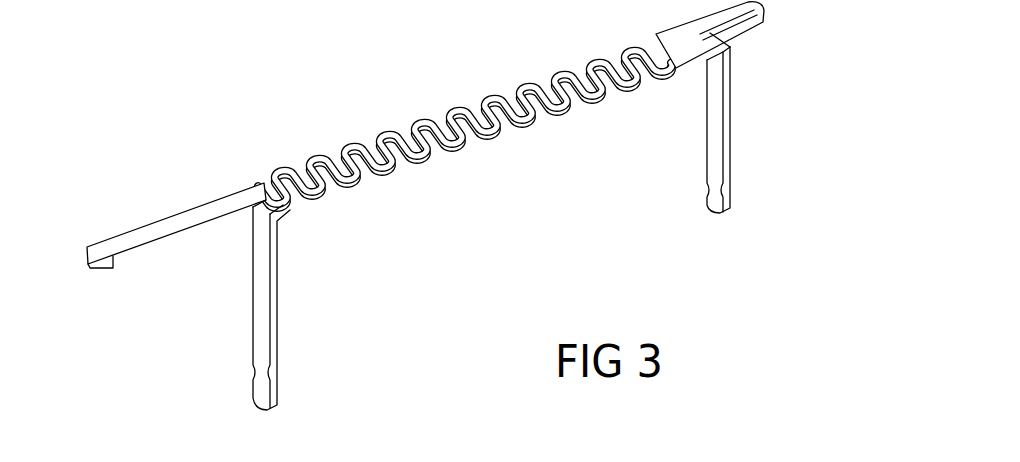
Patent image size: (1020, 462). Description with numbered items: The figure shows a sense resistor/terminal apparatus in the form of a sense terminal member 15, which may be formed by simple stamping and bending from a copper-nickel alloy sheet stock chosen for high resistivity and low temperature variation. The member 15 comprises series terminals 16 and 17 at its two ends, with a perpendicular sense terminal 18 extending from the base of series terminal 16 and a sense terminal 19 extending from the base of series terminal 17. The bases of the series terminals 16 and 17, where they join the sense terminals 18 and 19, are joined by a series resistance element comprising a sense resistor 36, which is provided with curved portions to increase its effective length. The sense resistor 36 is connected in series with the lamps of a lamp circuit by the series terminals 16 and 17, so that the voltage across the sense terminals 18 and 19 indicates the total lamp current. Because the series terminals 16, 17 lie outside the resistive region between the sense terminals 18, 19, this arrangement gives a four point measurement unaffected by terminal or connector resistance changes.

The sense terminal member 15 is at (464, 206).
The series terminal 16 is at (188, 218).
The series terminal 17 is at (762, 12).
The sense terminal 18 is at (257, 305).
The sense terminal 19 is at (717, 150).
The sense resistor 36 is at (357, 185).